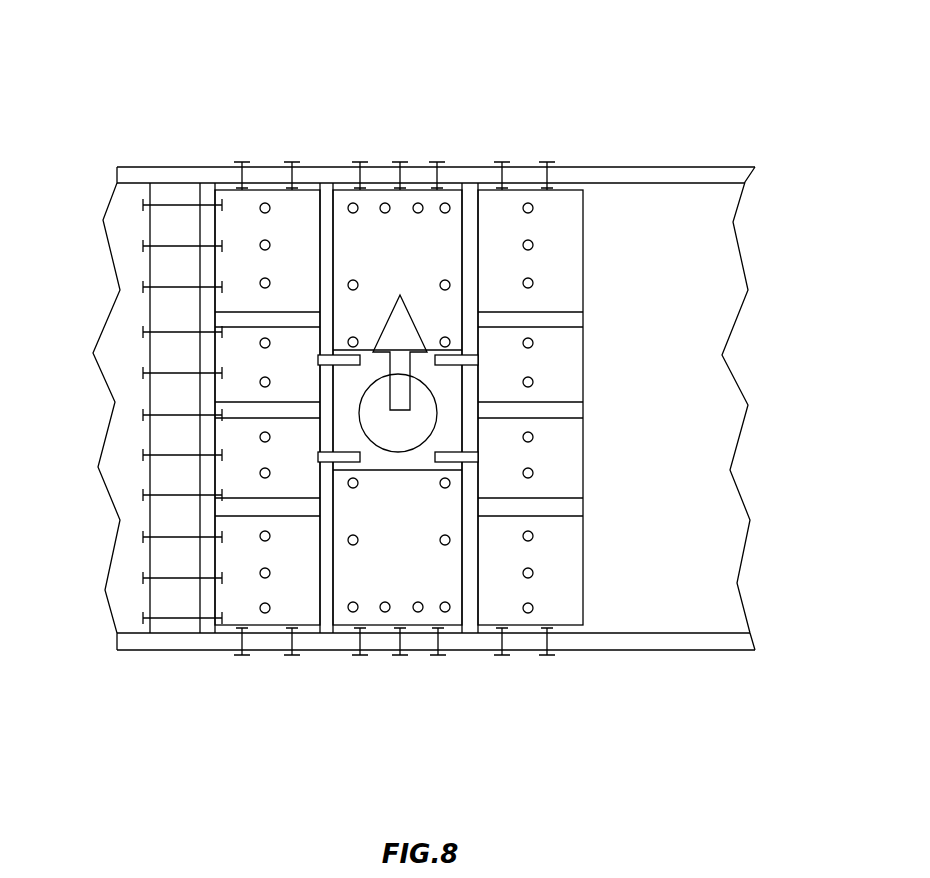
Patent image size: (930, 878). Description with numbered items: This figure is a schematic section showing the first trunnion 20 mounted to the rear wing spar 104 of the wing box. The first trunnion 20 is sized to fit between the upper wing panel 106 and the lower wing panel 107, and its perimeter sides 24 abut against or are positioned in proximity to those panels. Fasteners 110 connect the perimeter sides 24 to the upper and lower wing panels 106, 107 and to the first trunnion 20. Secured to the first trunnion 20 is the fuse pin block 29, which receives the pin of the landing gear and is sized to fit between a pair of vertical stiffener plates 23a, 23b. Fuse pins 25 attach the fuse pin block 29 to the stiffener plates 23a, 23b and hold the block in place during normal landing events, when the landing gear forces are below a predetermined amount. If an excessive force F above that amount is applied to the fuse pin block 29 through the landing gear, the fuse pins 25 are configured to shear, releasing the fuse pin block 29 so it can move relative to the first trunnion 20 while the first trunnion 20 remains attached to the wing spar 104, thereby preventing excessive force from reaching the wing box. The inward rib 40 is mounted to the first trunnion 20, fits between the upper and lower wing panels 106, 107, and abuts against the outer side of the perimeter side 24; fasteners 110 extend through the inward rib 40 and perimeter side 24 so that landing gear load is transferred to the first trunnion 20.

The first trunnion 20 is at (425, 121).
The inward rib 40 is at (178, 222).
The fasteners 110 is at (291, 160).
The perimeter sides 24 is at (310, 188).
The upper wing panel 106 is at (730, 167).
The lower wing panel 107 is at (730, 652).
The wing spar 104 is at (702, 560).
The fuse pins 25 is at (340, 360).
The fuse pin block 29 is at (422, 358).
The vertical stiffener plate 23a is at (323, 603).
The vertical stiffener plate 23b is at (468, 600).
The excessive force F is at (399, 292).